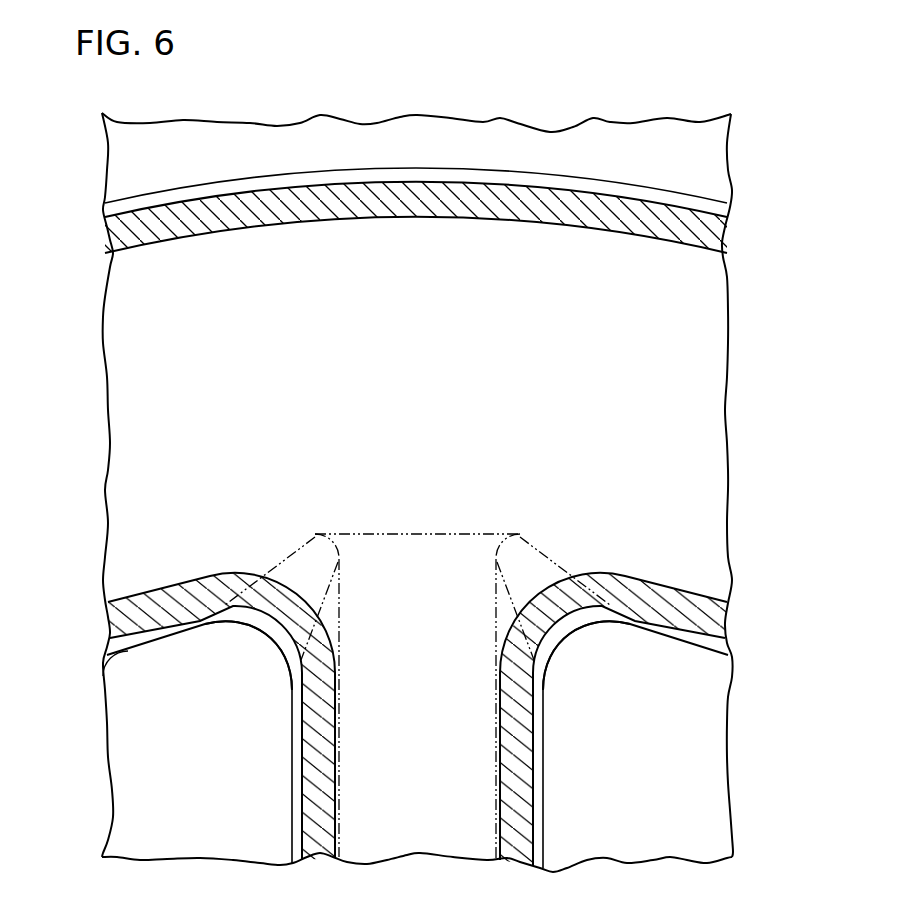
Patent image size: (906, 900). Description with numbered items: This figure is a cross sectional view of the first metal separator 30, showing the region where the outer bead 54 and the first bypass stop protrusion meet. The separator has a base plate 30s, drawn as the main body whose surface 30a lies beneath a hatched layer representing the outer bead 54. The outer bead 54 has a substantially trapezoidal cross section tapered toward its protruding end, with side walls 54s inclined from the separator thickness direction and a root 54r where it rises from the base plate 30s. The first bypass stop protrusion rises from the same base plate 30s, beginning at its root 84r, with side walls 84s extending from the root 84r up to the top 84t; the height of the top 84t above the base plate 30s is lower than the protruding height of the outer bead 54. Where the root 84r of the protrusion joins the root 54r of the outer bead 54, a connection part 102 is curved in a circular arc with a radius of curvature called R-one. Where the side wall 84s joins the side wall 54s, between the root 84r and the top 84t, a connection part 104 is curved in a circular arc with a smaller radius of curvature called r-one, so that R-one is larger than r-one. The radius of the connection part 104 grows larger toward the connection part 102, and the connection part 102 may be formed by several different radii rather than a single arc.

The first metal separator 30 is at (730, 112).
The upper surface of main body 30a is at (138, 168).
The base plate 30s is at (711, 789).
The outer bead 54 is at (538, 187).
The side wall of the outer bead 54s is at (362, 175).
The root of the outer bead 54r is at (103, 676).
The side wall of the first bypass stop protrusion 84s is at (298, 745).
The root of the first bypass stop protrusion 84r is at (292, 784).
The top of the first bypass stop protrusion 84t is at (423, 560).
The connection part 102 is at (262, 643).
The connection part 104 is at (317, 557).